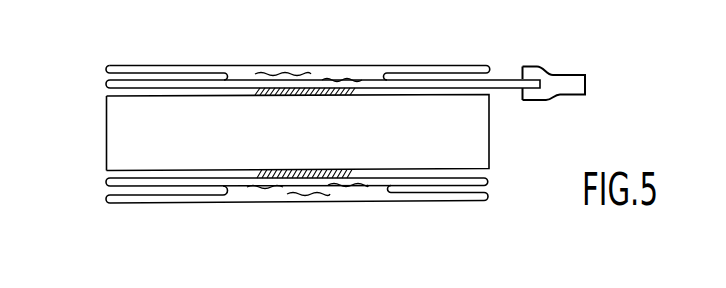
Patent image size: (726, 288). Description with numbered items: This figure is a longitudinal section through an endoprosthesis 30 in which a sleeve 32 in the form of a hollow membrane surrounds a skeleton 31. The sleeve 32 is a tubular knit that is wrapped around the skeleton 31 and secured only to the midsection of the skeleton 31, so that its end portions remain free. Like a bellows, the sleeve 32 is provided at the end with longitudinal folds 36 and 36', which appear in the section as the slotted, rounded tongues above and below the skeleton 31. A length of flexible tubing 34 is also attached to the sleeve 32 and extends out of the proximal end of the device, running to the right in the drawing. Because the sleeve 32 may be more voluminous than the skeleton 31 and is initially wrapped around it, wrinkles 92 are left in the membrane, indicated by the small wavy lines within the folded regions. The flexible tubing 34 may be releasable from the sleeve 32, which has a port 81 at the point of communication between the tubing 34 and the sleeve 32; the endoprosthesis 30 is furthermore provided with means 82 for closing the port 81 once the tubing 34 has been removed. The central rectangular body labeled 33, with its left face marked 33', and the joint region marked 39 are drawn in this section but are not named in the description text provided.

The endoprosthesis 30 is at (121, 54).
The skeleton 31 is at (215, 96).
The sleeve 32 is at (272, 65).
The insulating carrier body 33 is at (327, 133).
The left face of carrier body 33' is at (72, 133).
The flexible tubing 34 is at (505, 79).
The longitudinal fold 36 is at (437, 43).
The longitudinal fold 36' is at (166, 43).
The solder joint 39 is at (332, 78).
The port 81 is at (542, 67).
The means for closing the port 82 is at (580, 72).
The wrinkles 92 is at (303, 196).